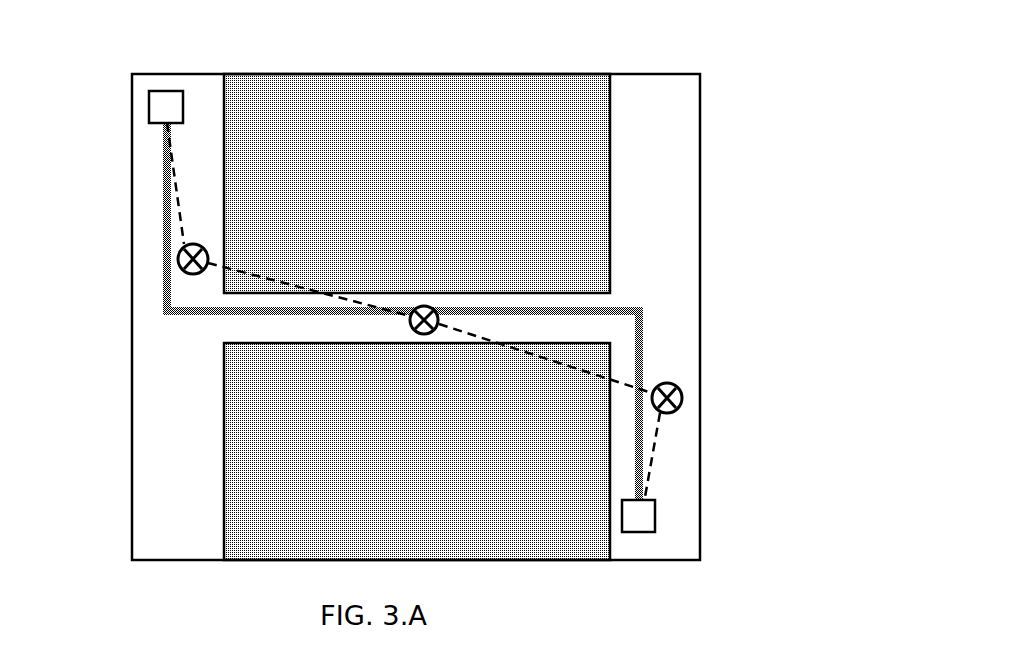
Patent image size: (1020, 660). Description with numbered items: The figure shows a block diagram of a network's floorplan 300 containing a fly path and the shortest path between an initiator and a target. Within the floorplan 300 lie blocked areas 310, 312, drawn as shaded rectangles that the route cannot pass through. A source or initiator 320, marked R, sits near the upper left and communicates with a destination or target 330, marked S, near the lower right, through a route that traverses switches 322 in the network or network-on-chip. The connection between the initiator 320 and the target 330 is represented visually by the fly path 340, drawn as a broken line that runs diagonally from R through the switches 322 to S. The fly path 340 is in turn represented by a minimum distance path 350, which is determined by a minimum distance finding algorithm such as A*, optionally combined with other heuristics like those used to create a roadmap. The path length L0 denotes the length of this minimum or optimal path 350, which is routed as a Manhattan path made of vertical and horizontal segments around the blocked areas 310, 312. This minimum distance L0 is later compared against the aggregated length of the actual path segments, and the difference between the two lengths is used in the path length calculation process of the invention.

The floorplan 300 is at (740, 100).
The blocked area 310 is at (417, 183).
The blocked area 312 is at (417, 451).
The initiator 320 is at (146, 106).
The switch 322 is at (422, 342).
The target 330 is at (640, 538).
The fly path 340 is at (672, 423).
The minimum distance path 350 is at (157, 258).
The minimum distance path length L0 is at (650, 343).